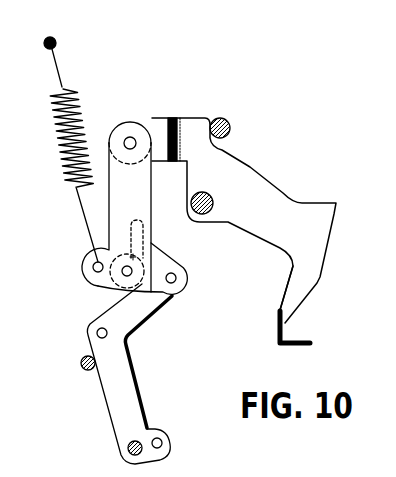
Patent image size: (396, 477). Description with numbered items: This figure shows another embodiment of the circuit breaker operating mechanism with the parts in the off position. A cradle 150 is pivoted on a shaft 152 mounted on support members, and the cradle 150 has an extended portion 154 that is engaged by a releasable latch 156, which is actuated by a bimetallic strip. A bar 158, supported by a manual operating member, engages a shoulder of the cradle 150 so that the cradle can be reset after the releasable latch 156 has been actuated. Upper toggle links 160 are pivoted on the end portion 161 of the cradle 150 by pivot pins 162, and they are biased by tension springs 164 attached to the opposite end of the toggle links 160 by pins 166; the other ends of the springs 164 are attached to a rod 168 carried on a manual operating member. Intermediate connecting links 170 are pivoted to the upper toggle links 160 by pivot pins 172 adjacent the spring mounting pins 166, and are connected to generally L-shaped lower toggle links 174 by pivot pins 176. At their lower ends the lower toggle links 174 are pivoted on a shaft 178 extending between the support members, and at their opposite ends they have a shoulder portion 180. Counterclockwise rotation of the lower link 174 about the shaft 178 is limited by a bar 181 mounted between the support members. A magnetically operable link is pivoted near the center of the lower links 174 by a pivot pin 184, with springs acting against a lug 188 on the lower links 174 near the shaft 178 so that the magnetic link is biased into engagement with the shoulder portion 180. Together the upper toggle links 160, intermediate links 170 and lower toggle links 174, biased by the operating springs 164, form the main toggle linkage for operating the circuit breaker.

The cradle 150 is at (284, 173).
The shaft 152 is at (210, 192).
The extended portion 154 is at (279, 308).
The releasable latch 156 is at (278, 327).
The bar 158 is at (231, 121).
The upper toggle links 160 is at (108, 227).
The end portion 161 is at (159, 117).
The pivot pins 162 is at (135, 134).
The tension springs 164 is at (62, 138).
The pins 166 is at (92, 266).
The rod 168 is at (53, 37).
The intermediate connecting links 170 is at (172, 298).
The pivot pins 172 is at (116, 291).
The lower toggle links 174 is at (134, 368).
The pivot pins 176 is at (177, 274).
The shaft 178 is at (128, 447).
The shoulder portion 180 is at (153, 223).
The bar 181 is at (84, 367).
The pivot pin 184 is at (97, 336).
The lug 188 is at (162, 438).